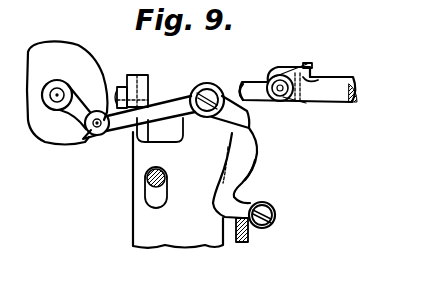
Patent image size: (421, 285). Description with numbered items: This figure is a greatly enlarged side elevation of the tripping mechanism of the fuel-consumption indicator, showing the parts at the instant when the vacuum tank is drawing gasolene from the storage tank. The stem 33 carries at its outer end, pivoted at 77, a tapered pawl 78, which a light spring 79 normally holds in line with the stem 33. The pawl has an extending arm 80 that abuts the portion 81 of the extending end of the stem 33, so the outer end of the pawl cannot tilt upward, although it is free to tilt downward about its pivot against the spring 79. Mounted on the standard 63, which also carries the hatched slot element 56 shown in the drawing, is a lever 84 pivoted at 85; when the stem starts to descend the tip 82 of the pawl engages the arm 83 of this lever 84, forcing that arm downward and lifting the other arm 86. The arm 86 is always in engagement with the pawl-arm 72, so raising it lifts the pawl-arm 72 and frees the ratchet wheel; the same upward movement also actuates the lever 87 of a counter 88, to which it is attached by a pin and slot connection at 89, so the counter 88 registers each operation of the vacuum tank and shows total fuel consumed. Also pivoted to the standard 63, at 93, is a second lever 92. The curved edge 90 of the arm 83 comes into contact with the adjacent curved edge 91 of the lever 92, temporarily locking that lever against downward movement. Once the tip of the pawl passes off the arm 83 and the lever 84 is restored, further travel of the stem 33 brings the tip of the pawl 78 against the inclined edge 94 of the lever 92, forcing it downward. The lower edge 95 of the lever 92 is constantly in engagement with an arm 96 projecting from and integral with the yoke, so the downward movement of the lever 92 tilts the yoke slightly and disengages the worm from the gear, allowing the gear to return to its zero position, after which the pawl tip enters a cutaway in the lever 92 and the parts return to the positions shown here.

The stem 33 is at (337, 95).
The slot 56 is at (156, 170).
The standard 63 is at (143, 221).
The pawl-arm 72 is at (133, 102).
The pivot 77 is at (278, 96).
The tapered pawl 78 is at (269, 80).
The spring 79 is at (288, 78).
The extending arm 80 is at (305, 70).
The portion of the extending end of the stem 81 is at (315, 80).
The tip of the pawl 82 is at (245, 90).
The arm of the lever 83 is at (252, 131).
The lever 84 is at (221, 128).
The pivot 85 is at (206, 88).
The arm of the lever 86 is at (160, 105).
The lever of the counter 87 is at (75, 98).
The counter 88 is at (55, 55).
The pin and slot connection 89 is at (79, 147).
The curved edge 90 is at (258, 153).
The curved edge 91 is at (219, 158).
The lever 92 is at (222, 203).
The pivot 93 is at (277, 226).
The inclined edge 94 is at (251, 168).
The lower edge 95 is at (277, 213).
The arm 96 is at (250, 241).